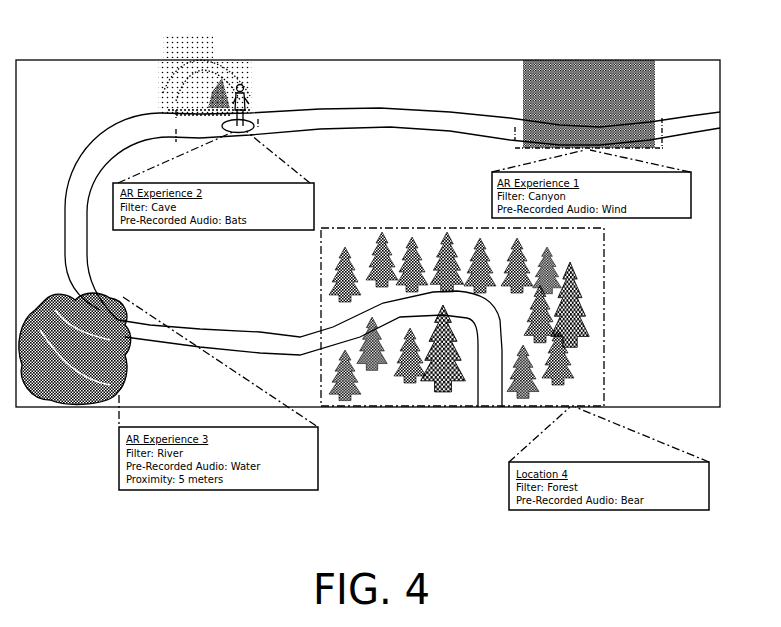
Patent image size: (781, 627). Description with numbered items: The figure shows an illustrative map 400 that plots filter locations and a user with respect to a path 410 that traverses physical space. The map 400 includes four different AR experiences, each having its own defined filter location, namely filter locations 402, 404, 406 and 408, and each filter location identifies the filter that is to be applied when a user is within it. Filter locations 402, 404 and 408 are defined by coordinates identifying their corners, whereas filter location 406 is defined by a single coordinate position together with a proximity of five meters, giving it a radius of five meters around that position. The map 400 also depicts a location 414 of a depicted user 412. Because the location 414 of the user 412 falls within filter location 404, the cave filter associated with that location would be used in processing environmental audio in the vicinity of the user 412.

The map 400 is at (721, 45).
The filter location 402 is at (662, 122).
The filter location 404 is at (256, 112).
The filter location 406 is at (110, 297).
The filter location 408 is at (603, 290).
The path 410 is at (101, 120).
The user 412 is at (251, 85).
The location 414 is at (248, 134).